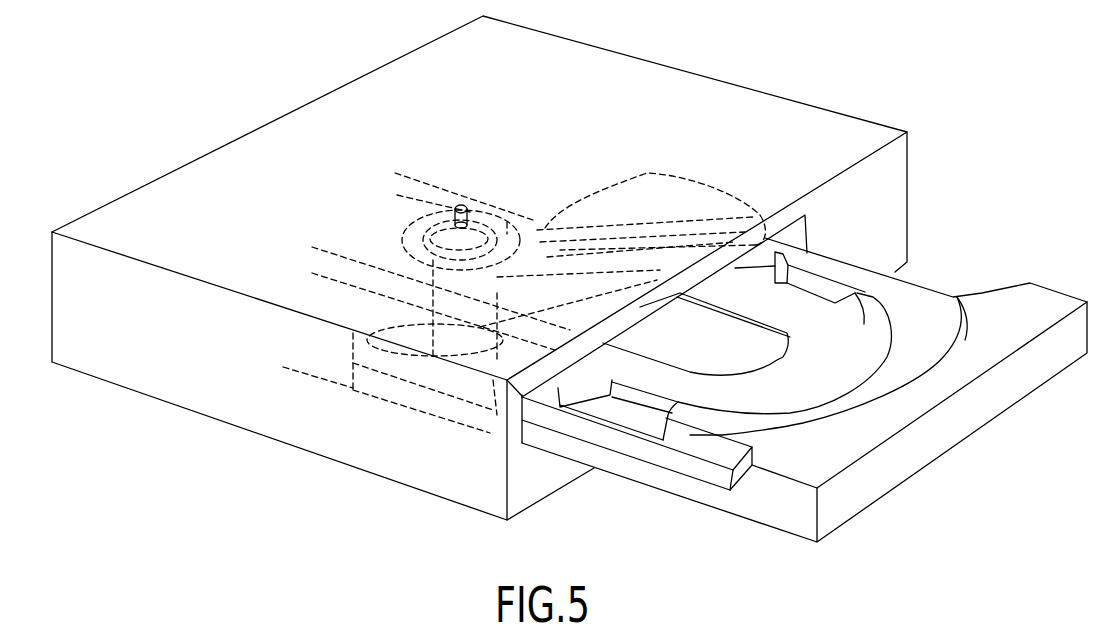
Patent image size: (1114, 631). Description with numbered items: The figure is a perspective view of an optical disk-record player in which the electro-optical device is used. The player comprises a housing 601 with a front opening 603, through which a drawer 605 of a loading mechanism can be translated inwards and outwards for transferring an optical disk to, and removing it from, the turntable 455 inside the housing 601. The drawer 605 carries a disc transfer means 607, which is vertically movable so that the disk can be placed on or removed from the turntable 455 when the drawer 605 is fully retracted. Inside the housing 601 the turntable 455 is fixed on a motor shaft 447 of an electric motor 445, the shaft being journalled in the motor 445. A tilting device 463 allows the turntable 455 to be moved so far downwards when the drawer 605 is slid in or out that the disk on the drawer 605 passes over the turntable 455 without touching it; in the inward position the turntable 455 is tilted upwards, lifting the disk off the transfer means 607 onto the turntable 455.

The housing 601 is at (872, 142).
The front opening 603 is at (798, 230).
The drawer 605 is at (1037, 312).
The disc transfer means 607 is at (913, 313).
The motor shaft 447 is at (447, 205).
The electric motor 445 is at (455, 343).
The turntable 455 is at (507, 222).
The tilting device 463 is at (558, 225).